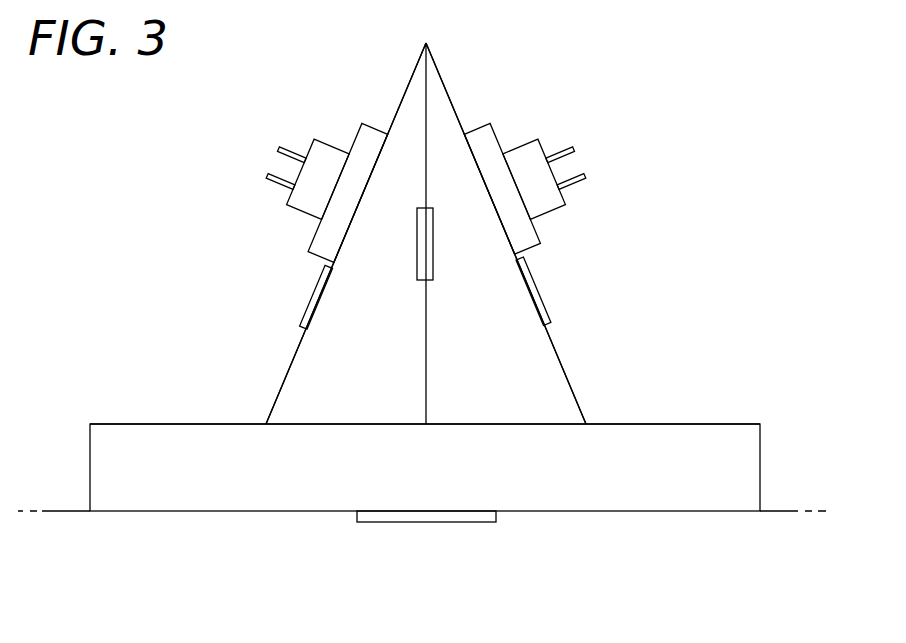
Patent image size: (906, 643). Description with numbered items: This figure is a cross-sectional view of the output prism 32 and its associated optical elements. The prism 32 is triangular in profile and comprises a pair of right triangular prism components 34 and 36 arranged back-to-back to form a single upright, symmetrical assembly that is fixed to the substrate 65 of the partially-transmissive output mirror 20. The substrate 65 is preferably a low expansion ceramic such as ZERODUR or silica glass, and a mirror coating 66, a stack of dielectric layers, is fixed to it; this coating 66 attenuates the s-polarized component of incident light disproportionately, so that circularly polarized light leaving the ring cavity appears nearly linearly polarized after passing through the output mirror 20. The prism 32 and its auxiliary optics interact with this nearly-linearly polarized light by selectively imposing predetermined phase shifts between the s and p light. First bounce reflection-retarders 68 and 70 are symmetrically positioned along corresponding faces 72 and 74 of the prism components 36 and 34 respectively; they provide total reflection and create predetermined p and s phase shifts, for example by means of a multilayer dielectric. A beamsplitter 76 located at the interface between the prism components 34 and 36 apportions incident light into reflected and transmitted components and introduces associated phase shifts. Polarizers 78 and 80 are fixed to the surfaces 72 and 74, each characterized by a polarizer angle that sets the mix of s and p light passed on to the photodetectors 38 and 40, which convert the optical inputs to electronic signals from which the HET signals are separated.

The partially-transmissive output mirror 20 is at (762, 413).
The prism 32 is at (568, 53).
The right triangular prism component 34 is at (503, 397).
The right triangular prism component 36 is at (370, 397).
The photodetector 38 is at (522, 143).
The photodetector 40 is at (328, 140).
The substrate 65 is at (648, 424).
The mirror coating 66 is at (473, 522).
The first bounce reflection-retarder 68 is at (315, 302).
The first bounce reflection-retarder 70 is at (535, 297).
The face of prism component 72 is at (292, 355).
The face of prism component 74 is at (568, 377).
The beamsplitter 76 is at (433, 270).
The polarizer 78 is at (307, 236).
The polarizer 80 is at (537, 232).